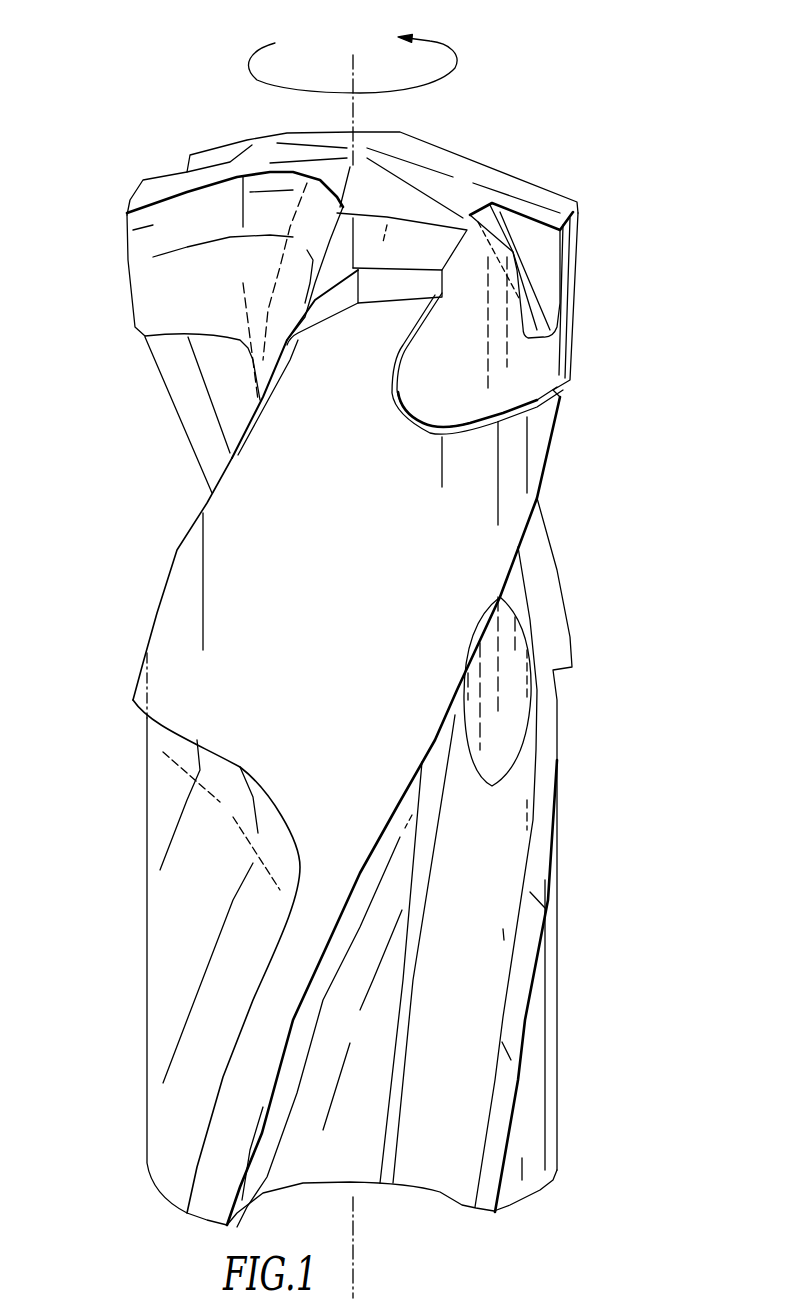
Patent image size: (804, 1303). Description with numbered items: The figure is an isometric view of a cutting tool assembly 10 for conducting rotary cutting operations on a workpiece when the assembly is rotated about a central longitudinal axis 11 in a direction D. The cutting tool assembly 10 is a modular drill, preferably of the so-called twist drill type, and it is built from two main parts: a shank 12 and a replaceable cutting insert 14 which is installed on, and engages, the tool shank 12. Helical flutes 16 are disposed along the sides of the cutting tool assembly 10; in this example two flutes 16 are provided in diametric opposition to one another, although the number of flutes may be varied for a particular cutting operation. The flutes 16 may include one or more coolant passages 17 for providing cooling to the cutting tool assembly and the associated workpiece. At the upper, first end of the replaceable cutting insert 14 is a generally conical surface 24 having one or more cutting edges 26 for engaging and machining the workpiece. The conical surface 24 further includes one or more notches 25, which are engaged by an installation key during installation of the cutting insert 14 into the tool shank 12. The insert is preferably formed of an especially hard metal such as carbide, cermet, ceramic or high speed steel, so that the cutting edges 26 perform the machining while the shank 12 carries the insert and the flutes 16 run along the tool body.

The cutting tool assembly 10 is at (628, 110).
The central longitudinal axis 11 is at (348, 62).
The direction D is at (452, 50).
The shank 12 is at (133, 787).
The replaceable cutting insert 14 is at (223, 105).
The helical flutes 16 is at (183, 402).
The coolant passages 17 is at (490, 652).
The conical surface 24 is at (410, 158).
The notches 25 is at (555, 259).
The cutting edges 26 is at (538, 188).